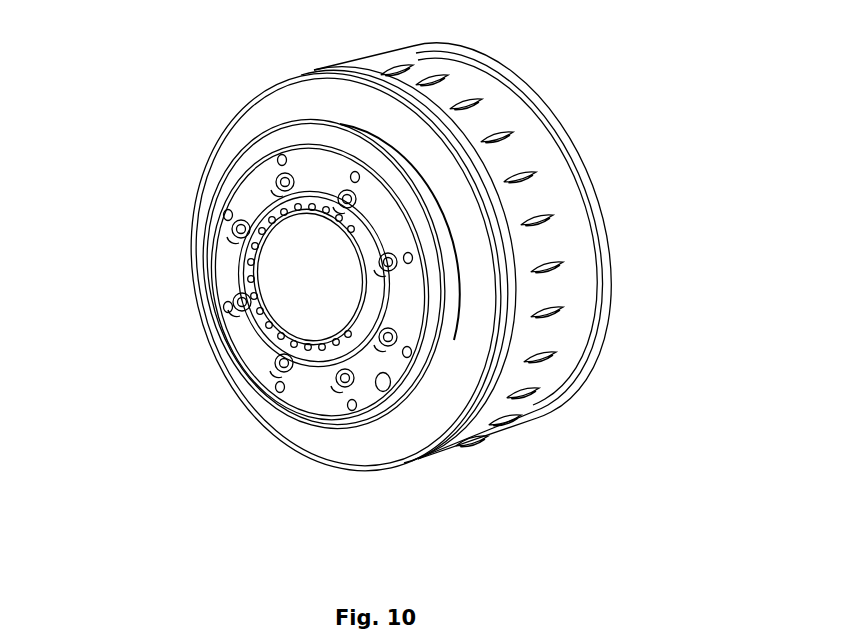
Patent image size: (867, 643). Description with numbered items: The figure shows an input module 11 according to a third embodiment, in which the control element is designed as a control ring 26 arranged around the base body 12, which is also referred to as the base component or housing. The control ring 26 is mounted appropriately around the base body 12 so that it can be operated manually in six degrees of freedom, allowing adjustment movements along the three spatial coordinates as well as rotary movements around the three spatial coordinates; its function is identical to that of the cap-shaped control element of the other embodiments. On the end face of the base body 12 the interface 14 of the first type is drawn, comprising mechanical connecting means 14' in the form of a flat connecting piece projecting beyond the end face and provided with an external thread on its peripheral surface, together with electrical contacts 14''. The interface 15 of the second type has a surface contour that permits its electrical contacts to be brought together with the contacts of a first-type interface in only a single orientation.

The input module 11 is at (182, 113).
The base body 12 is at (352, 448).
The interface 14 is at (317, 272).
The mechanical connecting means 14' is at (257, 274).
The electrical contacts 14'' is at (310, 368).
The interface of the second type 15 is at (605, 182).
The control ring 26 is at (552, 371).